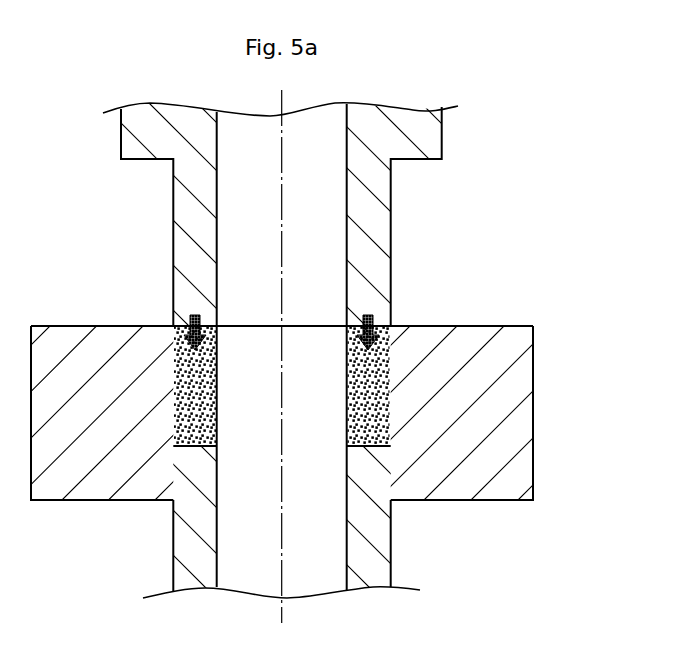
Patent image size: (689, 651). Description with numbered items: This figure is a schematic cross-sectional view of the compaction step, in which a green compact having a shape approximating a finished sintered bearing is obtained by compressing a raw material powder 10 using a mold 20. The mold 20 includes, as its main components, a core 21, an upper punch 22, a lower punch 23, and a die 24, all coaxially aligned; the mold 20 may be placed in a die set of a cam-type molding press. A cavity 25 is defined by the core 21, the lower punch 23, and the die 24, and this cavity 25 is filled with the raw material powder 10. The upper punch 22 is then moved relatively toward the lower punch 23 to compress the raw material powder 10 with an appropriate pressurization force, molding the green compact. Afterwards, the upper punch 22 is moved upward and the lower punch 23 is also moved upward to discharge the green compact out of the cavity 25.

The mold 20 is at (498, 140).
The upper punch 22 is at (378, 223).
The lower punch 23 is at (195, 562).
The core 21 is at (318, 572).
The die 24 is at (517, 420).
The cavity 25 is at (206, 399).
The raw material powder 10 is at (365, 368).